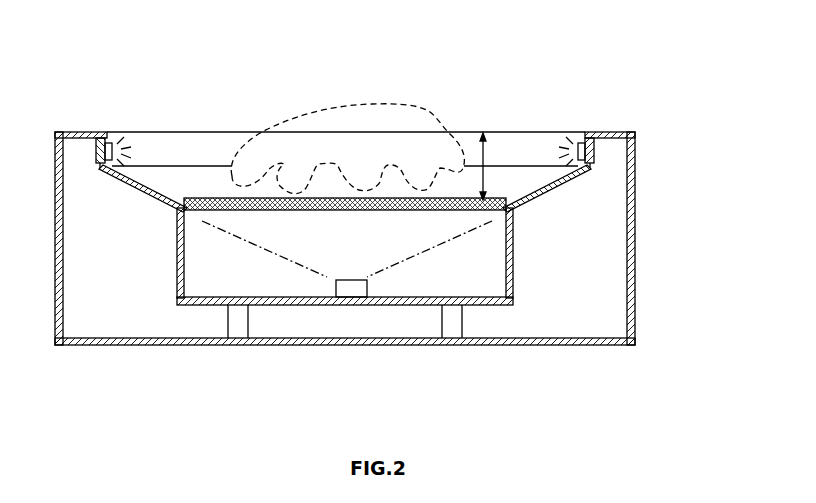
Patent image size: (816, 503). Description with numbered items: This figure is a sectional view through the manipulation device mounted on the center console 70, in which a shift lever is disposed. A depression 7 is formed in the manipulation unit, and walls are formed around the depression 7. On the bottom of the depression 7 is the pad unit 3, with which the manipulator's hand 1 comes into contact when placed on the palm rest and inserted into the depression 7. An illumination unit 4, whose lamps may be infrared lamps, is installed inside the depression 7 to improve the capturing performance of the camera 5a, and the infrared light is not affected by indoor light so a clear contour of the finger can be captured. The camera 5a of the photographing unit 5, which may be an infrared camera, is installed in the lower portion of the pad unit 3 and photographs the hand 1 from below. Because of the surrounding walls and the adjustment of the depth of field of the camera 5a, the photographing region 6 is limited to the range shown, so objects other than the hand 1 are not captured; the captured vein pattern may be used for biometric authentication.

The hand 1 is at (330, 105).
The pad unit 3 is at (208, 198).
The illumination unit 4 is at (96, 138).
The photographing unit 5 is at (334, 311).
The camera 5a is at (357, 290).
The photographing region 6 is at (487, 153).
The depression 7 is at (540, 178).
The center console 70 is at (635, 238).